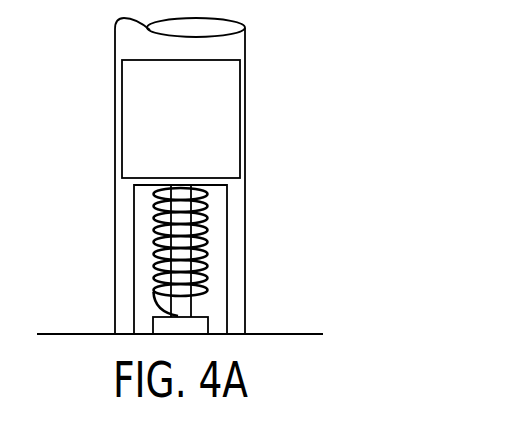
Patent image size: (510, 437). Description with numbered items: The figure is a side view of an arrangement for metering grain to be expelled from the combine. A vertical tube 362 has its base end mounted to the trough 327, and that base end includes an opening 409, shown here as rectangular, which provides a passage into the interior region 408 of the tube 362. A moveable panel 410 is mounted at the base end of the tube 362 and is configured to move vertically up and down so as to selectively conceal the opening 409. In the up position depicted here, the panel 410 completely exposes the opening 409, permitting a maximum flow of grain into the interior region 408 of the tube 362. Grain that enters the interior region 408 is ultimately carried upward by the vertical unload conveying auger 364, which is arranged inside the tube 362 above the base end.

The tube 362 is at (114, 102).
The moveable panel 410 is at (240, 118).
The opening 409 is at (228, 232).
The vertical unload conveying auger 364 is at (152, 262).
The interior region 408 is at (207, 303).
The trough 327 is at (305, 334).